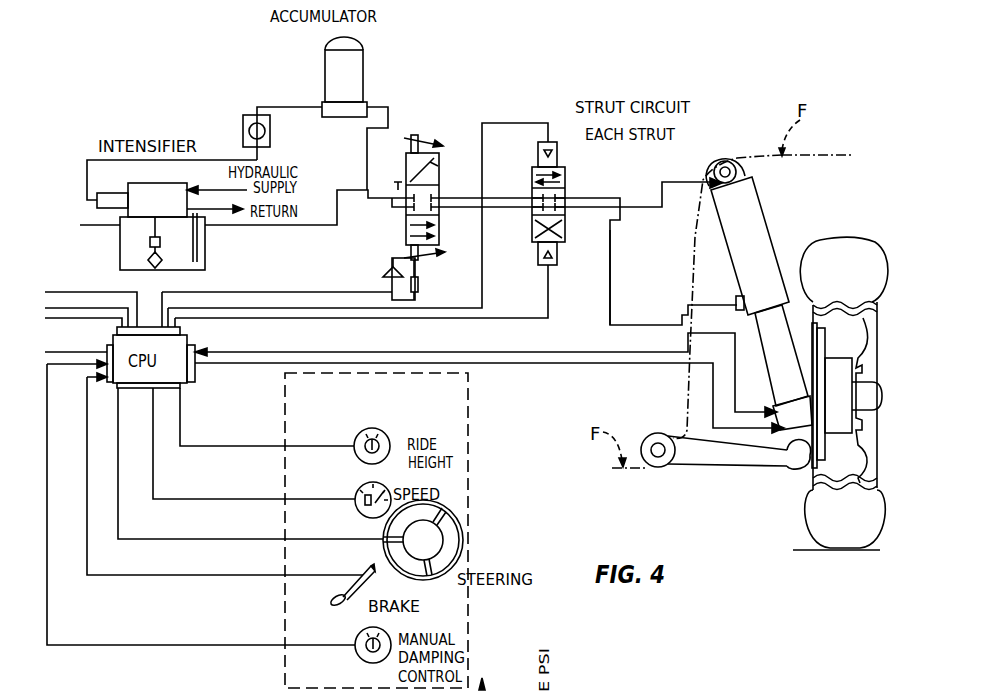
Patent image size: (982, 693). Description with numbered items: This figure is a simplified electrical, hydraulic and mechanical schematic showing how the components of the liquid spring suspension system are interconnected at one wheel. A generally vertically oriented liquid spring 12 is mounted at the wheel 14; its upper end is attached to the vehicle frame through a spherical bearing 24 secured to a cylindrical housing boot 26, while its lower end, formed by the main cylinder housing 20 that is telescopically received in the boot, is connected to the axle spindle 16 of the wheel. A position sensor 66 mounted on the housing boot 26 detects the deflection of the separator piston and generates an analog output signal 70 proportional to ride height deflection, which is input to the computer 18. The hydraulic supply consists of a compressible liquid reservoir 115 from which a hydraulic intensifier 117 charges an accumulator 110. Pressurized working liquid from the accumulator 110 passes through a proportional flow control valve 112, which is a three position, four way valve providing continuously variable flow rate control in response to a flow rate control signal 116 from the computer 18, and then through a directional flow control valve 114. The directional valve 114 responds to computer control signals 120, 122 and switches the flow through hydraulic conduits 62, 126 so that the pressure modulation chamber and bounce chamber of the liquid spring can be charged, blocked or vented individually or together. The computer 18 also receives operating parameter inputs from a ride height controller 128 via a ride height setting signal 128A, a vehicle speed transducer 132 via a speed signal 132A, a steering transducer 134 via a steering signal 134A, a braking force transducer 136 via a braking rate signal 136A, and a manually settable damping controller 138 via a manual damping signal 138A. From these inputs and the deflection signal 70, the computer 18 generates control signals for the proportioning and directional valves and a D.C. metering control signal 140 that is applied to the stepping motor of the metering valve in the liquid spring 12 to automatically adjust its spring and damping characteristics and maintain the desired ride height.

The liquid spring 12 is at (750, 266).
The wheel 14 is at (842, 252).
The axle spindle 16 is at (793, 463).
The computer 18 is at (180, 342).
The main cylinder housing 20 is at (782, 372).
The spherical bearing 24 is at (727, 160).
The cylindrical housing boot 26 is at (733, 240).
The hydraulic conduit 62 is at (680, 182).
The position sensor 66 is at (737, 298).
The analog output signal 70 is at (555, 350).
The accumulator 110 is at (352, 72).
The proportional flow control valve 112 is at (428, 125).
The directional flow control valve 114 is at (513, 110).
The compressible liquid reservoir 115 is at (125, 245).
The flow rate control signal 116 is at (293, 292).
The hydraulic intensifier 117 is at (135, 193).
The computer control signal 120 is at (483, 163).
The computer control signal 122 is at (548, 297).
The hydraulic conduit 126 is at (613, 292).
The ride height controller 128 is at (355, 442).
The ride height setting signal 128A is at (252, 446).
The vehicle speed transducer 132 is at (355, 495).
The vehicle speed signal 132A is at (252, 499).
The steering transducer 134 is at (458, 518).
The steering signal 134A is at (250, 539).
The braking force transducer 136 is at (365, 572).
The braking rate signal 136A is at (250, 575).
The manually settable damping controller 138 is at (356, 655).
The manual damping signal 138A is at (240, 645).
The metering control signal 140 is at (587, 365).